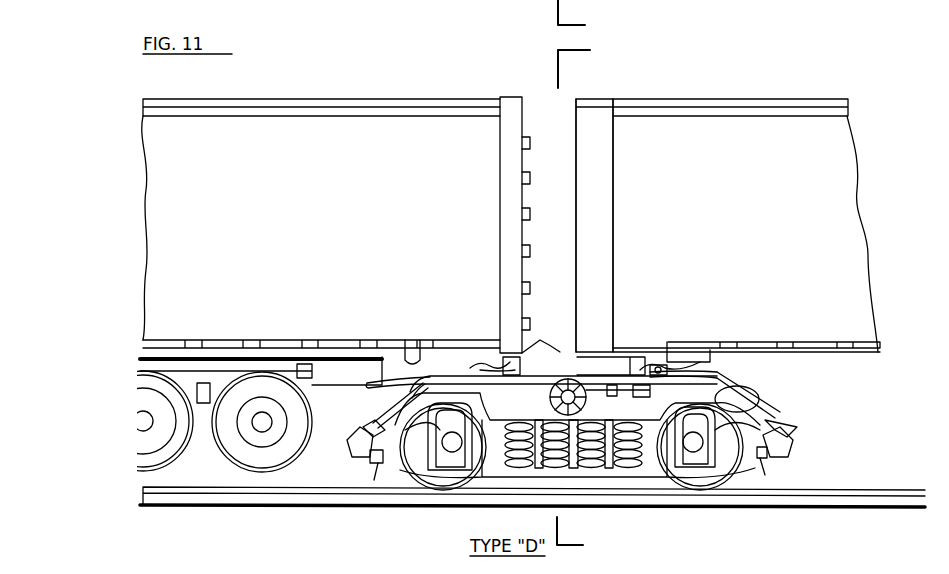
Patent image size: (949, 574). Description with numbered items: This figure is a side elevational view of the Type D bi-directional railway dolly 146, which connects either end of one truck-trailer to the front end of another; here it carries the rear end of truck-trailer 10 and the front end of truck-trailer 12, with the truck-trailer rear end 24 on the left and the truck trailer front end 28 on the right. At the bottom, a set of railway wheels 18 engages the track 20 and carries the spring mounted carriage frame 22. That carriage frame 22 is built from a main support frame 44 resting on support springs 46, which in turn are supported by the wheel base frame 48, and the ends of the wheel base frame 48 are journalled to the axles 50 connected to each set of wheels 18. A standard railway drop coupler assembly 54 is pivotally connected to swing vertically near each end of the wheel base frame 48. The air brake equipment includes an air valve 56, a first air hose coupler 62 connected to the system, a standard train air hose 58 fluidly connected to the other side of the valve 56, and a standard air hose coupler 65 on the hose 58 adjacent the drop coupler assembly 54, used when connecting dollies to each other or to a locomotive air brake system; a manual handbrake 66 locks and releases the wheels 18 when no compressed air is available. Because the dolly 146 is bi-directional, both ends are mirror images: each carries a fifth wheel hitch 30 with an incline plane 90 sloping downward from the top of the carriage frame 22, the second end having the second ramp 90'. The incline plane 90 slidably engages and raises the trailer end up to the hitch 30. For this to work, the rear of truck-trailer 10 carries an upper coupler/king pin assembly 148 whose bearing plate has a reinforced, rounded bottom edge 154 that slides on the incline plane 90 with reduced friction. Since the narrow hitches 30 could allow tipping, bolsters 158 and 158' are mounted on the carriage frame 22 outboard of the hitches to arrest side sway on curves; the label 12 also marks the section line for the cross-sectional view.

The truck-trailer 10 is at (327, 91).
The truck-trailer 12 is at (762, 80).
The railway wheels 18 is at (452, 482).
The track 20 is at (880, 490).
The spring mounted carriage frame 22 is at (533, 371).
The truck-trailer rear end 24 is at (522, 97).
The truck trailer front end 28 is at (576, 100).
The fifth wheel hitch 30 is at (430, 360).
The main support frame 44 is at (732, 380).
The support springs 46 is at (515, 418).
The wheel base frame 48 is at (568, 472).
The axles 50 is at (397, 443).
The railway drop coupler assembly 54 is at (347, 434).
The air valve 56 is at (652, 391).
The standard train air hose 58 is at (367, 386).
The first air hose coupler 62 is at (610, 400).
The standard air hose coupler 65 is at (377, 463).
The manual handbrake 66 is at (629, 366).
The incline plane 90 is at (755, 399).
The second ramp 90' is at (385, 405).
The bi-directional railway dolly 146 is at (815, 393).
The upper coupler/king pin assembly 148 is at (410, 358).
The bottom edge of coupler bearing plate 154 is at (503, 345).
The bolster 158 is at (626, 347).
The bolster 158' is at (550, 346).